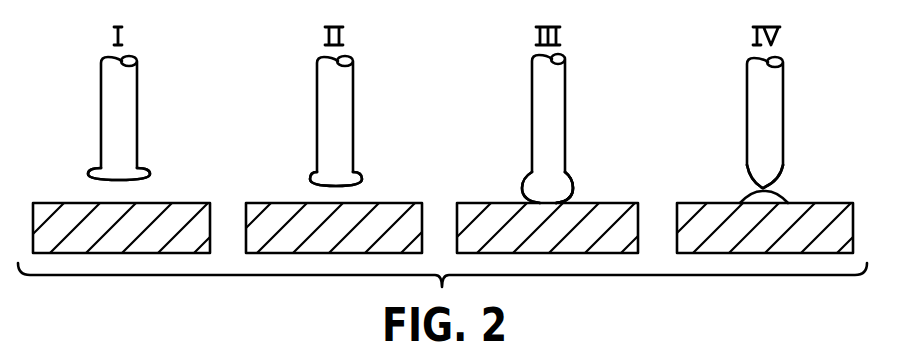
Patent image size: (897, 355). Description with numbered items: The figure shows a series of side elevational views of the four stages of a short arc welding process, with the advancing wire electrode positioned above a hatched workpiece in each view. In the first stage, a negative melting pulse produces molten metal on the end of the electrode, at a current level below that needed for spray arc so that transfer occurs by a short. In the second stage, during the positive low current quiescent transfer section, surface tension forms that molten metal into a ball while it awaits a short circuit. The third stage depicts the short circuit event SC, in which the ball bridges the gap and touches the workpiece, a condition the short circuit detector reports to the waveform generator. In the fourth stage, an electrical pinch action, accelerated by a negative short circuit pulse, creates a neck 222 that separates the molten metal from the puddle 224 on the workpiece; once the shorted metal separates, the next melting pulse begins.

The short circuit event SC is at (522, 187).
The neck 222 is at (757, 185).
The puddle 224 is at (770, 188).